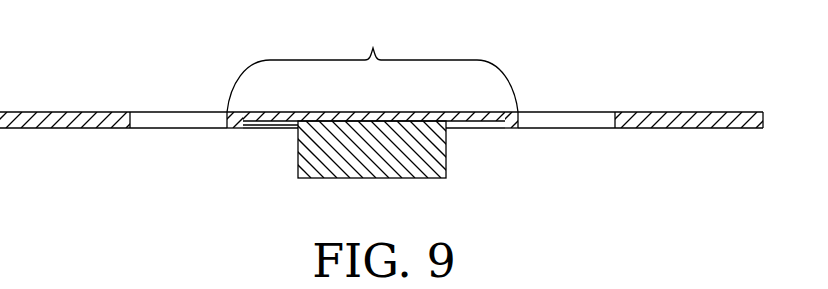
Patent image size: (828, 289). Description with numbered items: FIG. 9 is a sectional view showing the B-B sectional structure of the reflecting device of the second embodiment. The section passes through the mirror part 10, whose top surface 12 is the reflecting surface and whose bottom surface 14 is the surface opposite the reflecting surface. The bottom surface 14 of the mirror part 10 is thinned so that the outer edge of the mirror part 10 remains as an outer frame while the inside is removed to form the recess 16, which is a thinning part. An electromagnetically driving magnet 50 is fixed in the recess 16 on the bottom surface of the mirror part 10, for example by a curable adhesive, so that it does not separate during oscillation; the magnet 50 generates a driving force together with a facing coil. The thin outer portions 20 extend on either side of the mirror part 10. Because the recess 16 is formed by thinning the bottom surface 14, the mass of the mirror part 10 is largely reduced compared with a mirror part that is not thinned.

The mirror part 10 is at (373, 48).
The top surface 12 is at (385, 112).
The bottom surface 14 is at (282, 128).
The recess 16 is at (261, 128).
The substrate segment 20 is at (70, 112).
The electromagnetically driving magnet 50 is at (447, 158).